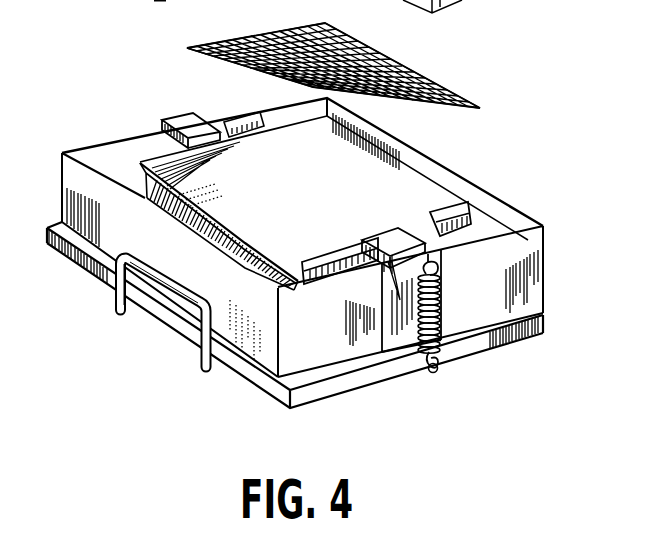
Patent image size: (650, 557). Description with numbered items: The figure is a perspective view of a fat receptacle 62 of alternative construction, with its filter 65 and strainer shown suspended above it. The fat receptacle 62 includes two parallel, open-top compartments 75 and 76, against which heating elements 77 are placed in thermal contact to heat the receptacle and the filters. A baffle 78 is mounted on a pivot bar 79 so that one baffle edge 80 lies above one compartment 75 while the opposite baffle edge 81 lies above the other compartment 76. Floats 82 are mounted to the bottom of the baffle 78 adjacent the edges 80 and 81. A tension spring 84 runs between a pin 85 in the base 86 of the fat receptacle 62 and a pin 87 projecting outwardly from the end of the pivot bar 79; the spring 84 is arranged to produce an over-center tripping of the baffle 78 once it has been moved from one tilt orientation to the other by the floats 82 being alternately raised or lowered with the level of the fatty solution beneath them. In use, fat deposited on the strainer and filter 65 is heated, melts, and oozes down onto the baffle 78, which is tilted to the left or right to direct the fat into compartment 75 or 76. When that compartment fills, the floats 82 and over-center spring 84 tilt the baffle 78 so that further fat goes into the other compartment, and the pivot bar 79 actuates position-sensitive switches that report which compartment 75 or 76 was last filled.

The fat receptacle 62 is at (506, 183).
The filter 65 is at (250, 42).
The compartment 75 is at (283, 366).
The compartment 76 is at (532, 242).
The heating element 77 is at (198, 355).
The baffle 78 is at (344, 204).
The pivot bar 79 is at (174, 118).
The baffle edge 80 is at (224, 227).
The baffle edge 81 is at (399, 183).
The float 82 is at (309, 285).
The tension spring 84 is at (441, 316).
The pin 85 is at (433, 376).
The base 86 is at (348, 391).
The pin 87 is at (441, 279).